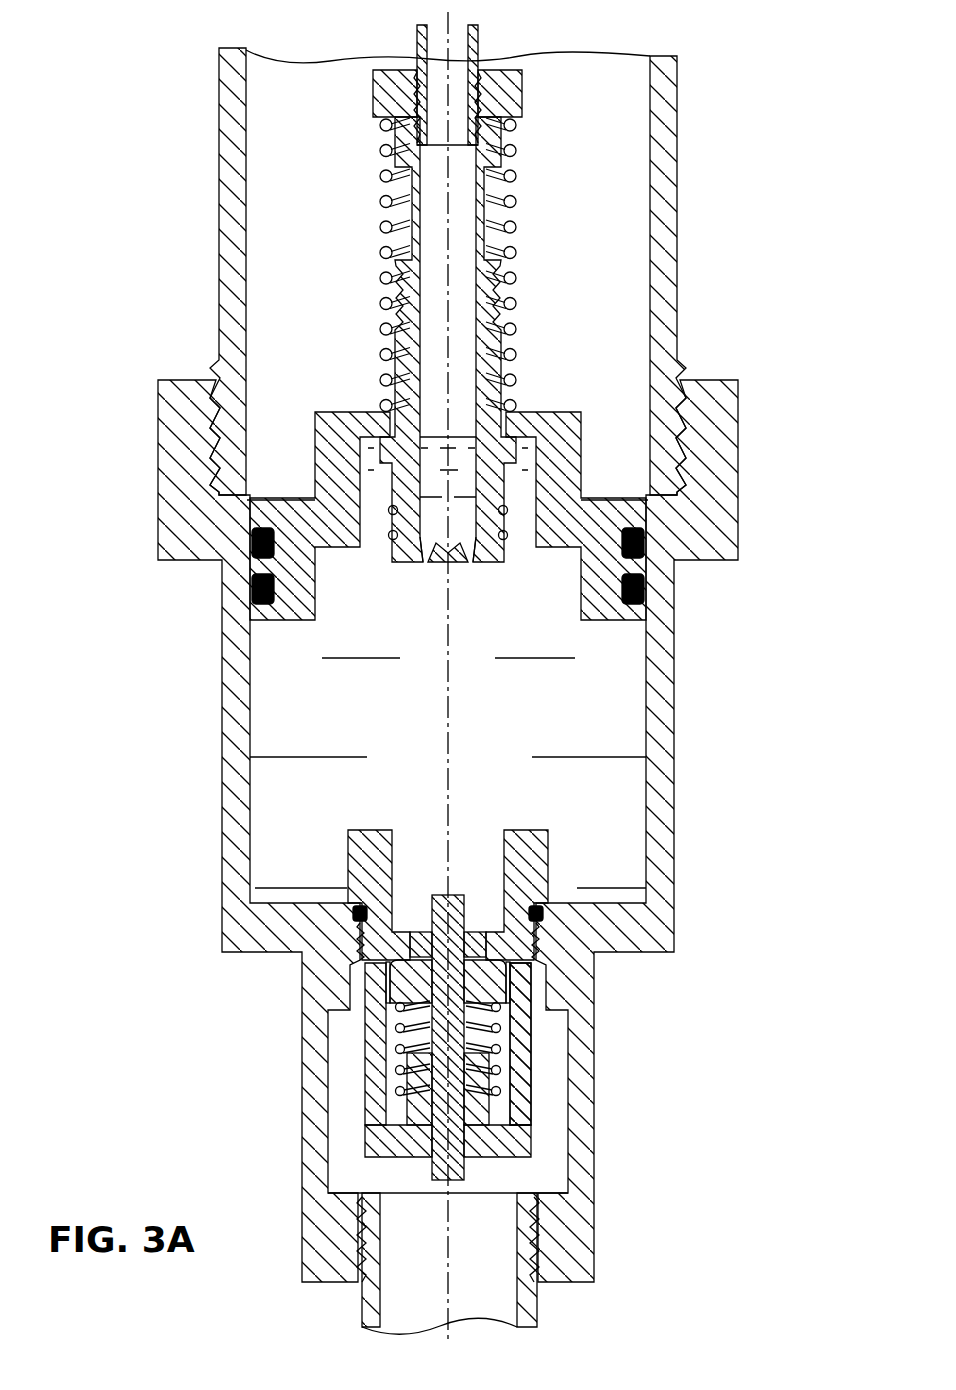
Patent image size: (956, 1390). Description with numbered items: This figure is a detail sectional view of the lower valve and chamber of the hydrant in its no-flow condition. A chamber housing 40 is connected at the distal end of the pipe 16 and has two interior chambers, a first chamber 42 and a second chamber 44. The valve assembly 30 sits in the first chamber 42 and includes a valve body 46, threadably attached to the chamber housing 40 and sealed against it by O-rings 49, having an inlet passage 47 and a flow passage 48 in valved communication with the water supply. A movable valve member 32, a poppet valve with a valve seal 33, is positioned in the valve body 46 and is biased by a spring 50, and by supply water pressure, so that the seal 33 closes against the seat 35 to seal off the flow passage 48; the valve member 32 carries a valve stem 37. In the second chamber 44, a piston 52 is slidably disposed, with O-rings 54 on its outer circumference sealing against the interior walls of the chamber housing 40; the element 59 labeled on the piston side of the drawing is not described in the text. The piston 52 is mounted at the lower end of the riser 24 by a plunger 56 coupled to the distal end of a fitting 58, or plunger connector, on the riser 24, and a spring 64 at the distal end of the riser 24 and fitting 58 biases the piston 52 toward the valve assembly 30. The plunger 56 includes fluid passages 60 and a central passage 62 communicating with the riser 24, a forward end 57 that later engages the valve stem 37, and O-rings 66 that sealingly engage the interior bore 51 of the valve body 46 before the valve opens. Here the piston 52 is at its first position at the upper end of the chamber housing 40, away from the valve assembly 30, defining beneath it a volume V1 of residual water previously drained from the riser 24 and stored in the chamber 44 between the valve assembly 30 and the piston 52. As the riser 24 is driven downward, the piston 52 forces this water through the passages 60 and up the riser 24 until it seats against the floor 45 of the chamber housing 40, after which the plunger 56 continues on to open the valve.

The pipe 16 is at (678, 137).
The riser 24 is at (478, 40).
The fitting 58 is at (523, 97).
The spring 64 is at (517, 213).
The plunger 56 is at (504, 305).
The piston 52 is at (314, 428).
The central passage 62 is at (436, 391).
The seat 59 is at (530, 437).
The O-rings 66 is at (507, 532).
The chamber housing 40 is at (156, 494).
The O-rings 54 is at (250, 555).
The fluid passages 60 is at (420, 548).
The forward end 57 is at (455, 562).
The volume V1 is at (343, 725).
The second chamber 44 is at (553, 725).
The floor 45 is at (573, 890).
The valve body 46 is at (347, 855).
The interior bore 51 is at (503, 852).
The valve stem 37 is at (443, 895).
The flow passage 48 is at (415, 930).
The seal 33 is at (355, 957).
The O-rings 49 is at (560, 958).
The inlet passage 47 is at (384, 984).
The valve member 32 is at (515, 1002).
The seat 35 is at (392, 1030).
The valve assembly 30 is at (360, 1068).
The spring 50 is at (527, 1058).
The first chamber 42 is at (532, 1183).